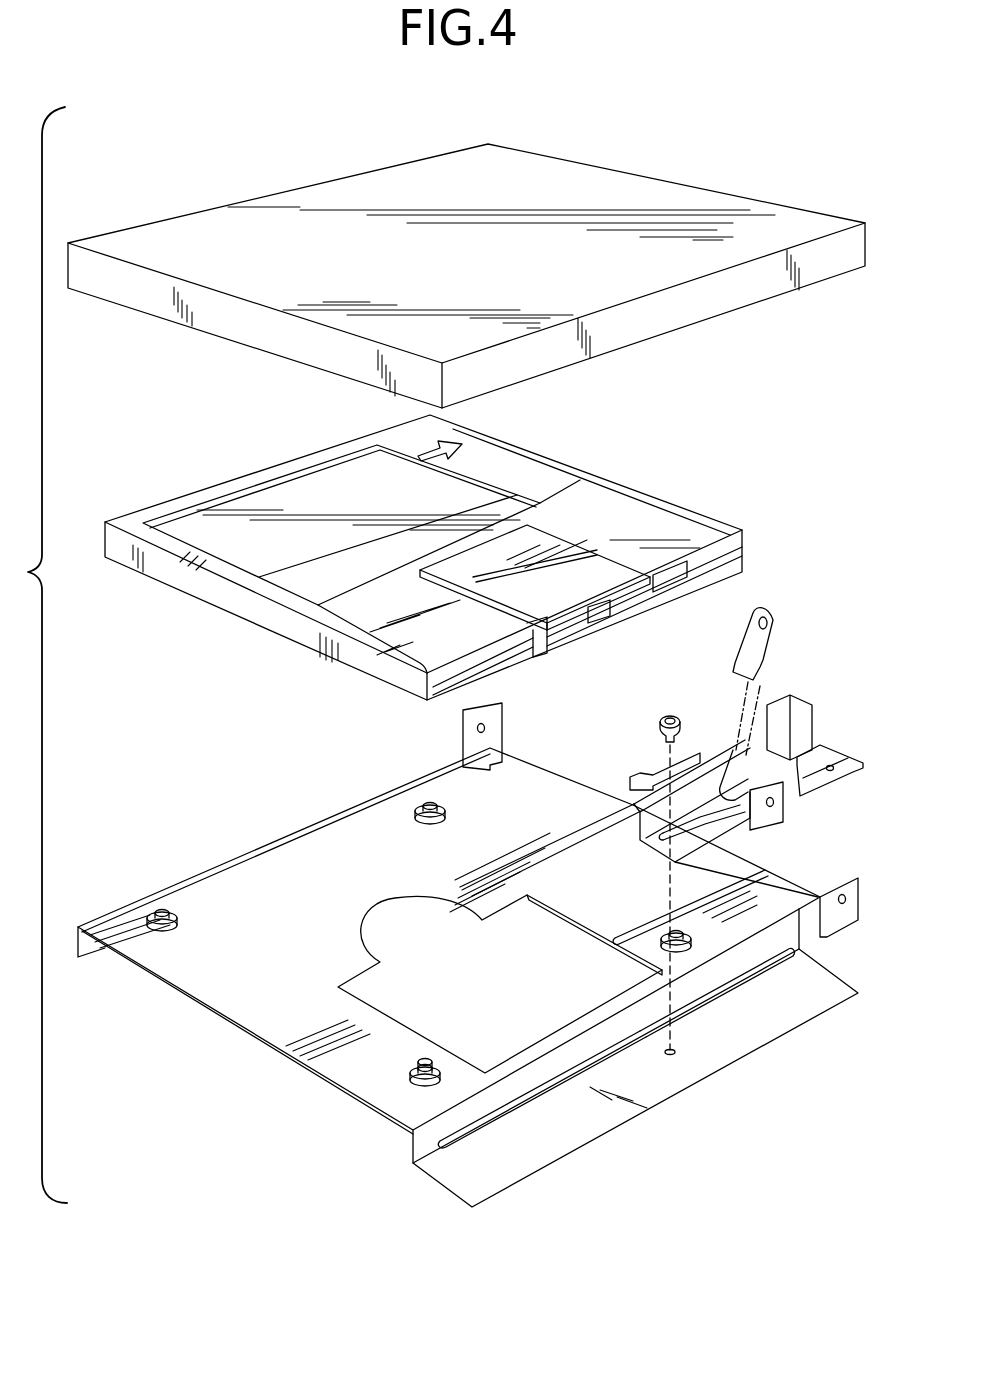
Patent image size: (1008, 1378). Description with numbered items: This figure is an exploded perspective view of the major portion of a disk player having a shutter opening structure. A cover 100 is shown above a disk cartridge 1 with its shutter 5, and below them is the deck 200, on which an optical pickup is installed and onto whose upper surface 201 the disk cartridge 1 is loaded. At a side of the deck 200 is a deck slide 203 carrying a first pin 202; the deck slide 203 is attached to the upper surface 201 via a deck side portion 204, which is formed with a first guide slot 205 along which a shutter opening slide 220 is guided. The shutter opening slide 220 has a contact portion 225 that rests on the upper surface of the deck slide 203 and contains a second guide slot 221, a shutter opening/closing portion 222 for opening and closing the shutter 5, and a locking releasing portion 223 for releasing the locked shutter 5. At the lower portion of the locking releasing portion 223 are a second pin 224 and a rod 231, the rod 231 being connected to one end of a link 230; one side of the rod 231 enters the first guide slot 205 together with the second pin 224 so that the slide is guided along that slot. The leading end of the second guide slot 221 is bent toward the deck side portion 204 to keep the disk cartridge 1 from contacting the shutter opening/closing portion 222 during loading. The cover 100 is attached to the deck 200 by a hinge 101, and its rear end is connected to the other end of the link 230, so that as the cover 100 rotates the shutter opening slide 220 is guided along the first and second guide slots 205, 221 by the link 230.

The disk cartridge 1 is at (236, 622).
The shutter 5 is at (535, 580).
The cover 100 is at (707, 297).
The hinge 101 is at (845, 897).
The deck 200 is at (237, 1058).
The upper surface 201 is at (340, 1043).
The first pin 202 is at (670, 712).
The deck slide 203 is at (548, 1130).
The deck side portion 204 is at (420, 1143).
The first guide slot 205 is at (793, 951).
The shutter opening slide 220 is at (830, 698).
The second guide slot 221 is at (832, 766).
The shutter opening/closing portion 222 is at (633, 777).
The locking releasing portion 223 is at (790, 695).
The second pin 224 is at (782, 808).
The contact portion 225 is at (840, 780).
The link 230 is at (752, 650).
The rod 231 is at (745, 812).